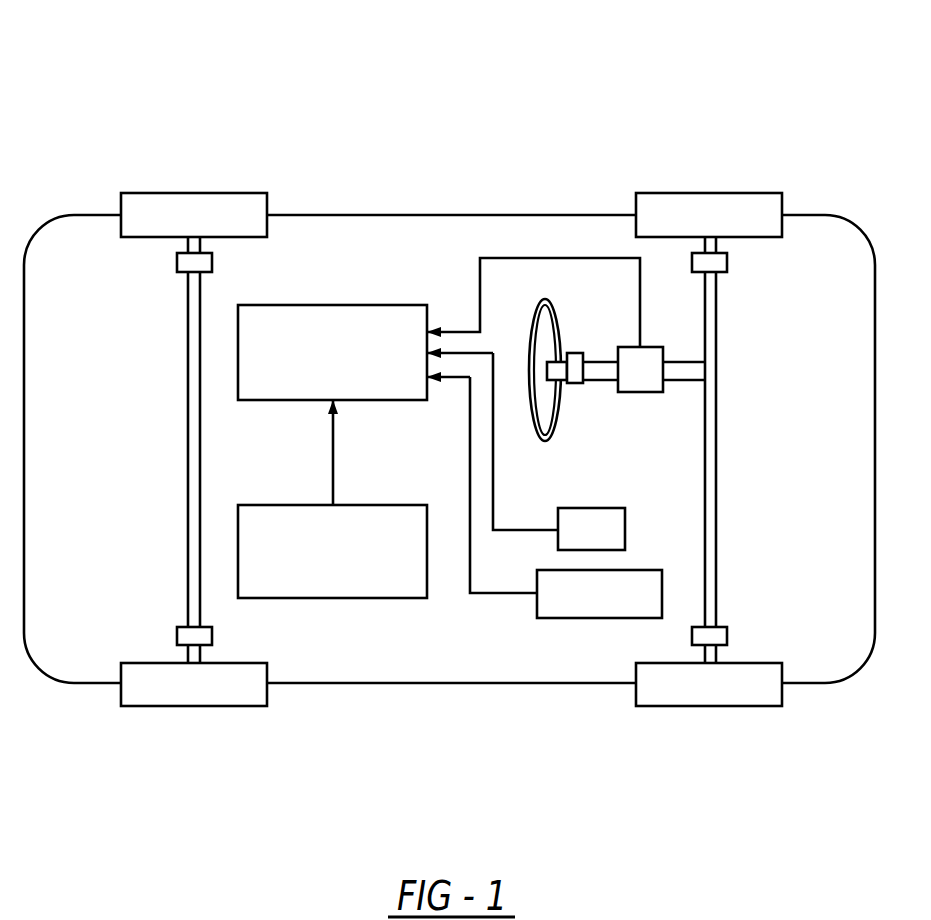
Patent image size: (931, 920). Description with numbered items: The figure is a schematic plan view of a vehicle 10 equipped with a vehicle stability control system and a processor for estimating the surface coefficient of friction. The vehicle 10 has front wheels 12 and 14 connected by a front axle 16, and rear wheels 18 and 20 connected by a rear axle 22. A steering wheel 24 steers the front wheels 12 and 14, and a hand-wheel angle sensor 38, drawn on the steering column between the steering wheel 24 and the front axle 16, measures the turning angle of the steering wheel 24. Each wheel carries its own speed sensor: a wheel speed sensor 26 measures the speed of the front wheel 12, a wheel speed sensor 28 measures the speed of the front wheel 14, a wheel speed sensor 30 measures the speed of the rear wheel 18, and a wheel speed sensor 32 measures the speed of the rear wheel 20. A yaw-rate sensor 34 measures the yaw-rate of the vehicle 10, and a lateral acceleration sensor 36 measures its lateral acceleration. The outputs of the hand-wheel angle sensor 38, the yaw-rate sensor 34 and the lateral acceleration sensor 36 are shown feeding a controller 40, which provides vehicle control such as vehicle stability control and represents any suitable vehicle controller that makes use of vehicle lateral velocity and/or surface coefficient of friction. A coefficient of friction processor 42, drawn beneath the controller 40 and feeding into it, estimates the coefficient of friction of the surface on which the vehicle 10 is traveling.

The vehicle 10 is at (664, 110).
The front wheel 12 is at (750, 193).
The front wheel 14 is at (708, 706).
The front axle 16 is at (717, 558).
The rear wheel 18 is at (190, 193).
The rear wheel 20 is at (193, 706).
The rear axle 22 is at (188, 448).
The steering wheel 24 is at (545, 441).
The wheel speed sensor 26 is at (727, 262).
The wheel speed sensor 28 is at (728, 637).
The wheel speed sensor 30 is at (177, 262).
The wheel speed sensor 32 is at (177, 637).
The yaw-rate sensor 34 is at (625, 528).
The lateral acceleration sensor 36 is at (575, 618).
The hand-wheel angle sensor 38 is at (645, 392).
The controller 40 is at (347, 305).
The coefficient of friction processor 42 is at (345, 598).